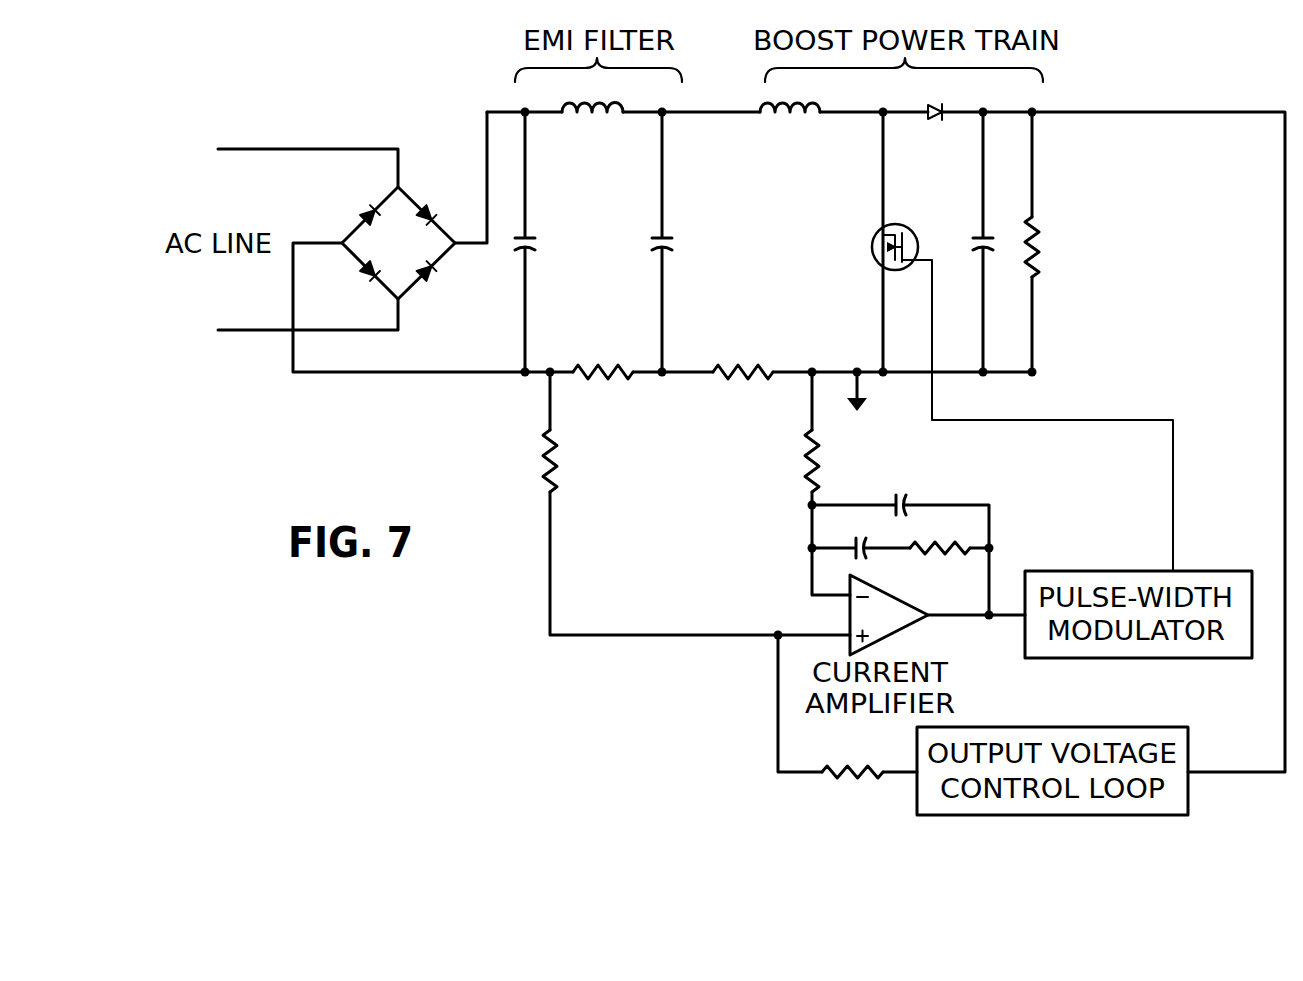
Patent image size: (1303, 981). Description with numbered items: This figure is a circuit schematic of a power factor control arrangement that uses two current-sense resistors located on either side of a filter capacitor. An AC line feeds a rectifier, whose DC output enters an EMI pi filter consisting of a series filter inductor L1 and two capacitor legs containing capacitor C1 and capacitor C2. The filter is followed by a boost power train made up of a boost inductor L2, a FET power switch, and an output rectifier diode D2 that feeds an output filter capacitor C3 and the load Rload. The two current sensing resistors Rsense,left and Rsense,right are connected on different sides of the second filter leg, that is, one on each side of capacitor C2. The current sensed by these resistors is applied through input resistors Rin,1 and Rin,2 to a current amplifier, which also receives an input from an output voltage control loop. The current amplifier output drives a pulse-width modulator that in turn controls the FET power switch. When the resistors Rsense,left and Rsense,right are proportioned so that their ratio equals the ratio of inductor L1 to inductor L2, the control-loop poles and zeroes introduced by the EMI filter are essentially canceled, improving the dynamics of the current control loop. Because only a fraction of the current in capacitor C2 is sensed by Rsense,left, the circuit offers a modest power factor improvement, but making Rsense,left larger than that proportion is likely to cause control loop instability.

The series filter inductor L1 is at (592, 90).
The boost inductor L2 is at (790, 90).
The boost diode D2 is at (938, 94).
The capacitor C1 is at (547, 242).
The capacitor C2 is at (685, 242).
The output filter capacitor C3 is at (964, 242).
The load Rload is at (1068, 242).
The current sensing resistor Rsense,left is at (600, 349).
The current sensing resistor Rsense,right is at (746, 349).
The current amplifier input resistor Rin,1 is at (847, 483).
The current amplifier input resistor Rin,2 is at (696, 503).